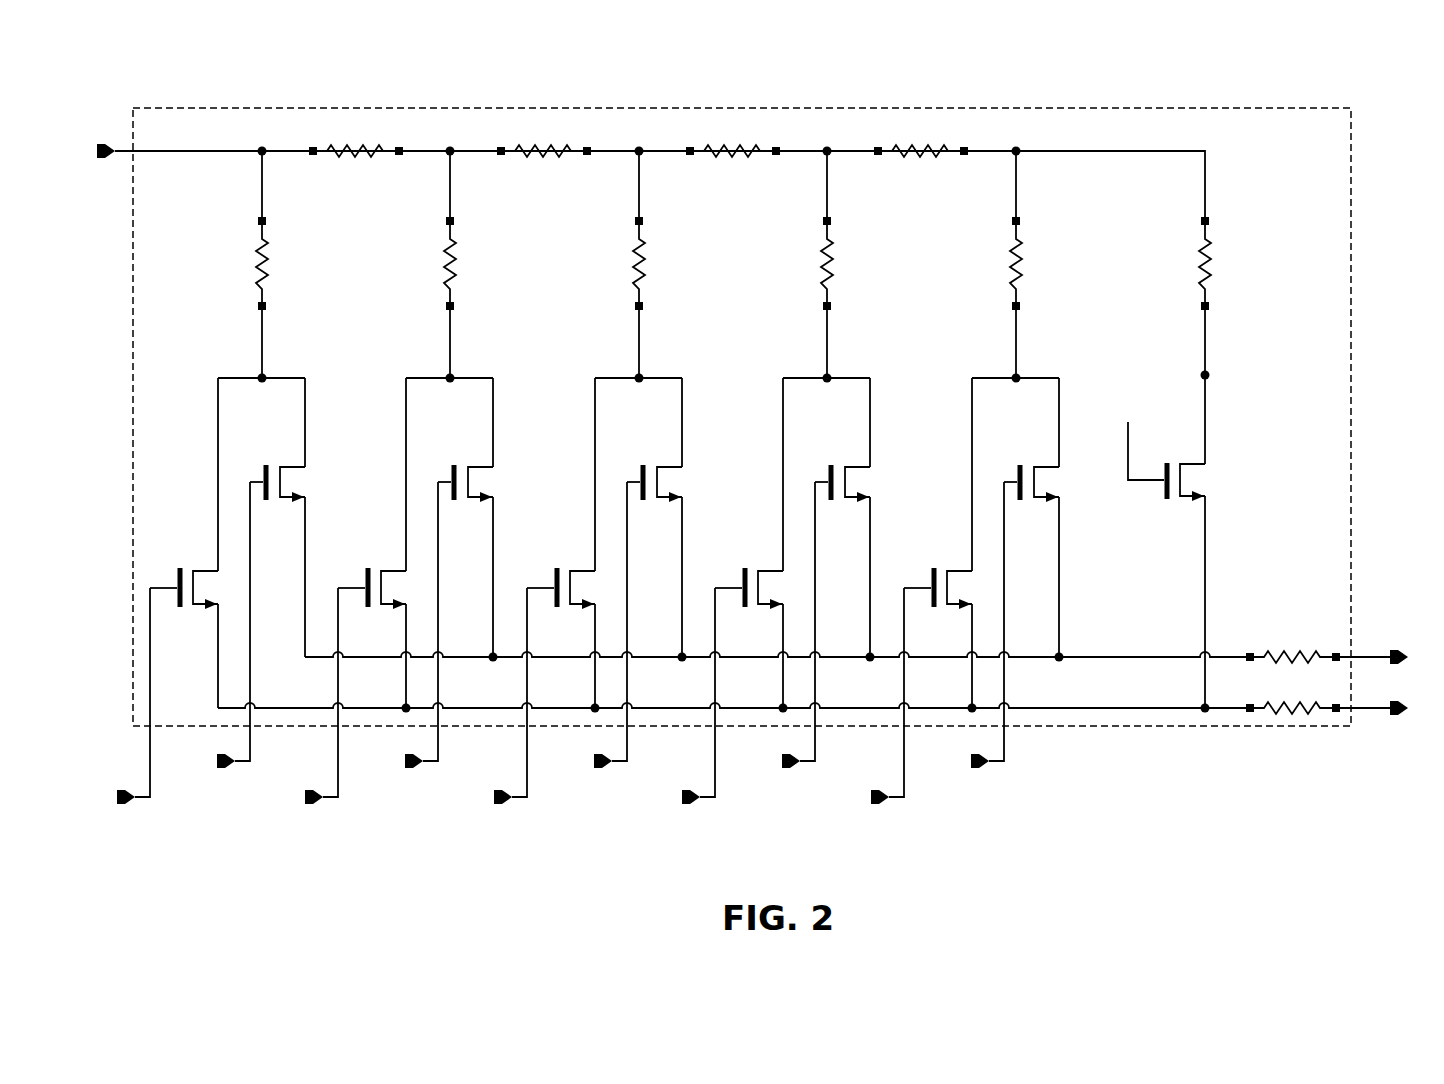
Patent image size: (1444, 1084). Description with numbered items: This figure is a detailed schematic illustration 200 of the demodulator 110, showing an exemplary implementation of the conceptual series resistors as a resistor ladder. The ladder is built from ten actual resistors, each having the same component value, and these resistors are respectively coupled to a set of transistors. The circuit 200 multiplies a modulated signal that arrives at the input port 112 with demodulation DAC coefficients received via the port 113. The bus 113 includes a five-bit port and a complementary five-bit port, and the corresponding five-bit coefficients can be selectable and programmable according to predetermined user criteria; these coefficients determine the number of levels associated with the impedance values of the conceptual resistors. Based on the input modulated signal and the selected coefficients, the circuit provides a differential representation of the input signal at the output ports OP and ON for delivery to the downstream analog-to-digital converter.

The detailed schematic illustration 200 is at (1374, 94).
The demodulator 110 is at (185, 108).
The input port 112 is at (105, 144).
The port 113 is at (1010, 832).